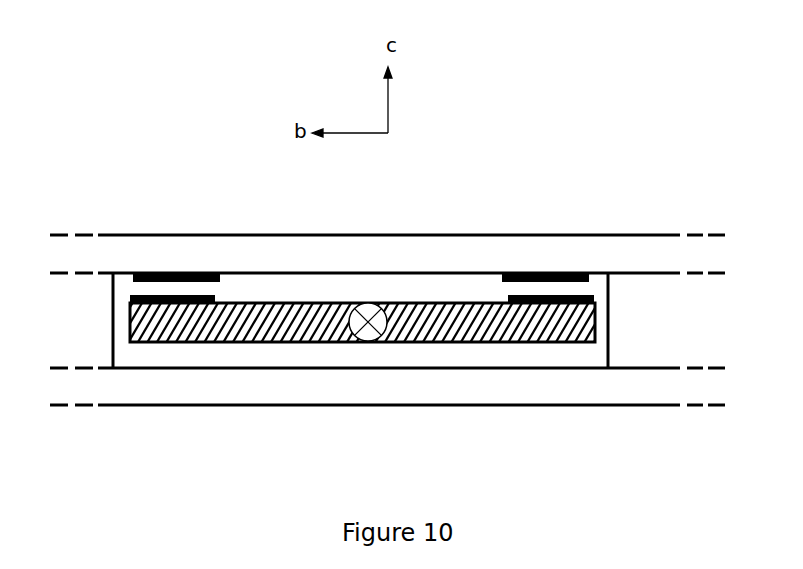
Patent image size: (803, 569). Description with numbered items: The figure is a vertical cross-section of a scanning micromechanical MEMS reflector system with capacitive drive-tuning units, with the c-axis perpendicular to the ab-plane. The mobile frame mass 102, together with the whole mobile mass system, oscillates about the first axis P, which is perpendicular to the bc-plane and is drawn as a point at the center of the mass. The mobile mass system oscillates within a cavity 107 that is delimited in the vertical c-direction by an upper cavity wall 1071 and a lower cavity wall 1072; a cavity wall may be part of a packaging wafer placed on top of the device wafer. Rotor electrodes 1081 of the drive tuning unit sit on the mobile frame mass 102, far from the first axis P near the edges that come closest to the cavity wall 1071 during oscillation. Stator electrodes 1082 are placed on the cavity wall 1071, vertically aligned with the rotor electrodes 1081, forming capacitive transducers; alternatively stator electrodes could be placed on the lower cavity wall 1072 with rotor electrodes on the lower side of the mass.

The mobile frame mass 102 is at (270, 360).
The cavity 107 is at (586, 367).
The cavity wall 1071 is at (299, 260).
The cavity wall 1072 is at (460, 378).
The rotor electrodes 1081 is at (182, 308).
The stator electrodes 1082 is at (170, 258).
The first axis P is at (364, 343).